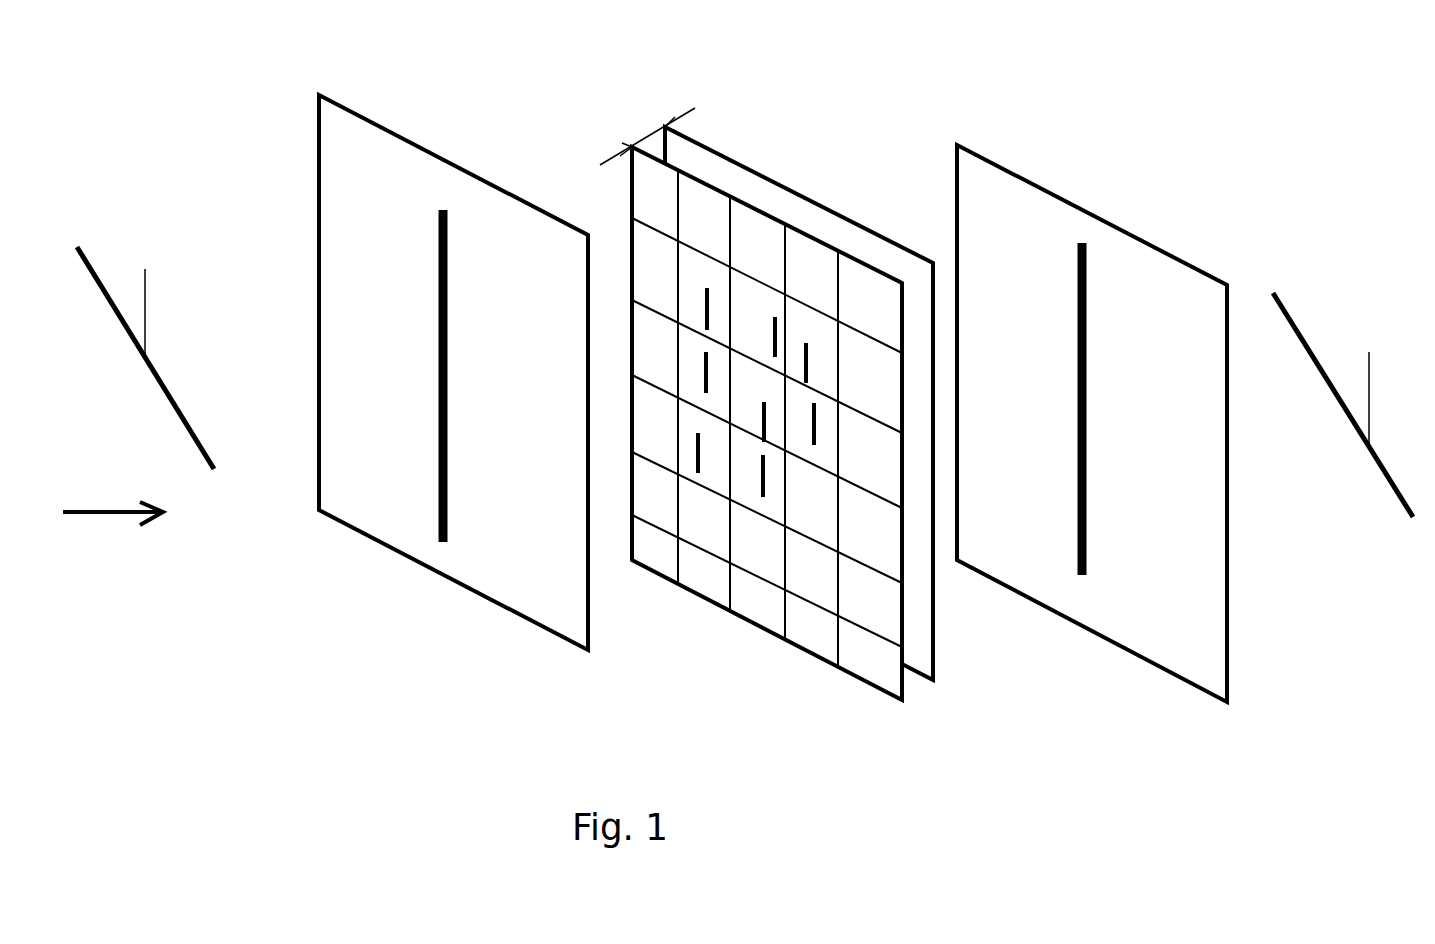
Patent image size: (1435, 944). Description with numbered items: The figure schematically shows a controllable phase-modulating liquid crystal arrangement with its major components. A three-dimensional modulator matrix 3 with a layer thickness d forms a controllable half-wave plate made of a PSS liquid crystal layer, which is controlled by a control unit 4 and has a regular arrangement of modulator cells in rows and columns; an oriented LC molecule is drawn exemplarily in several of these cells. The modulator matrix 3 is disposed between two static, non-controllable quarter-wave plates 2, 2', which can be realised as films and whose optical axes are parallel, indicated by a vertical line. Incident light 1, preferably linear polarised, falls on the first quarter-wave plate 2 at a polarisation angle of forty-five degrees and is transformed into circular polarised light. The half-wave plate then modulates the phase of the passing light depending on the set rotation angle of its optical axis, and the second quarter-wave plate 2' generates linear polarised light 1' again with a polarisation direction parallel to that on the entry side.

The polarisation direction of incident light 1 is at (145, 358).
The polarisation direction of exiting light 1' is at (1343, 405).
The non-controllable λ/4 plate 2 is at (453, 373).
The second non-controllable λ/4 plate 2' is at (1092, 423).
The modulator matrix 3 is at (751, 404).
The control unit 4 is at (770, 200).